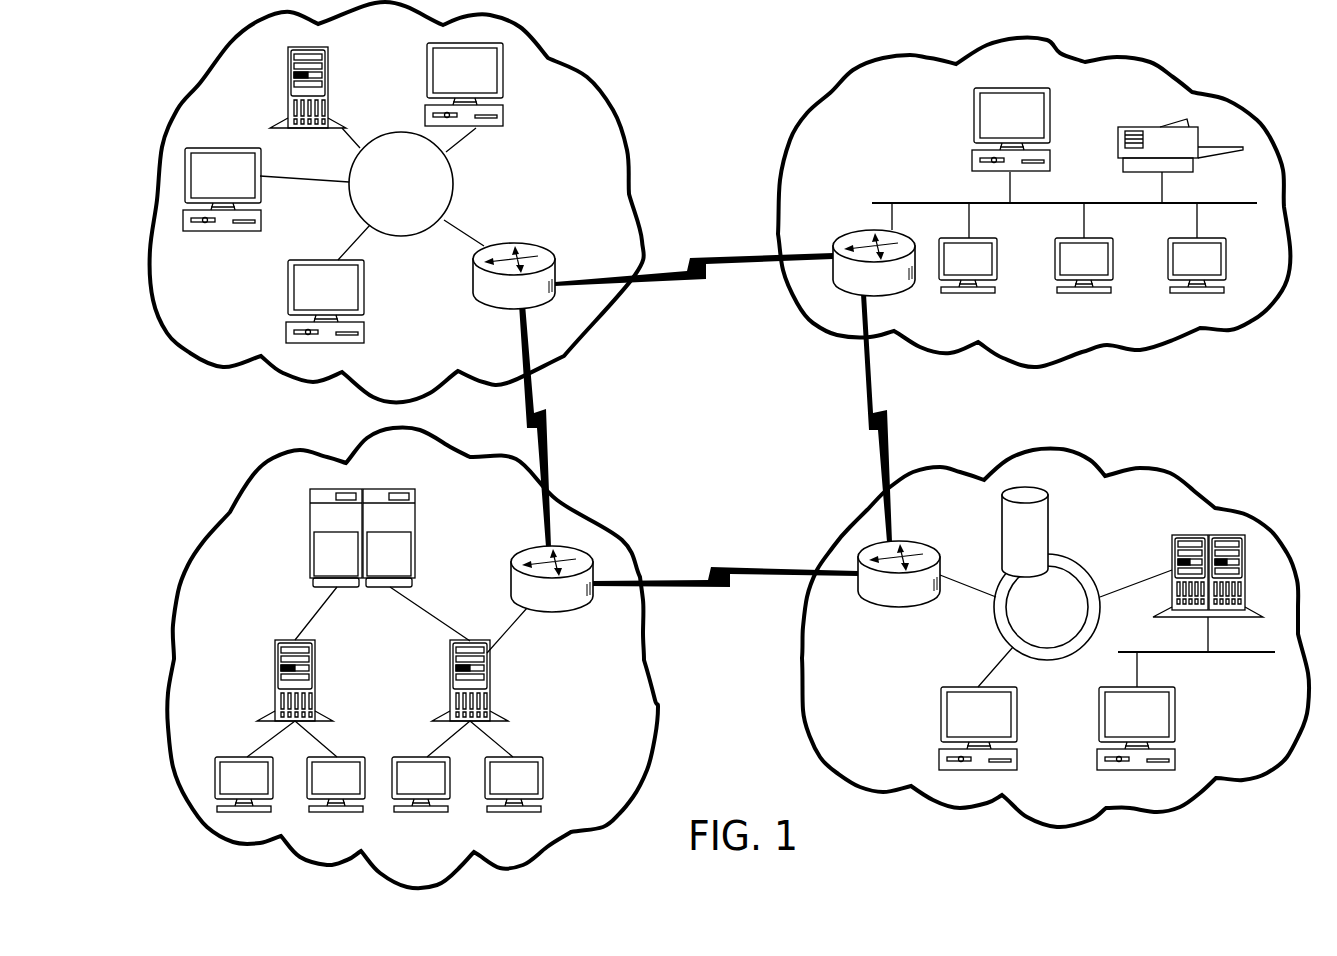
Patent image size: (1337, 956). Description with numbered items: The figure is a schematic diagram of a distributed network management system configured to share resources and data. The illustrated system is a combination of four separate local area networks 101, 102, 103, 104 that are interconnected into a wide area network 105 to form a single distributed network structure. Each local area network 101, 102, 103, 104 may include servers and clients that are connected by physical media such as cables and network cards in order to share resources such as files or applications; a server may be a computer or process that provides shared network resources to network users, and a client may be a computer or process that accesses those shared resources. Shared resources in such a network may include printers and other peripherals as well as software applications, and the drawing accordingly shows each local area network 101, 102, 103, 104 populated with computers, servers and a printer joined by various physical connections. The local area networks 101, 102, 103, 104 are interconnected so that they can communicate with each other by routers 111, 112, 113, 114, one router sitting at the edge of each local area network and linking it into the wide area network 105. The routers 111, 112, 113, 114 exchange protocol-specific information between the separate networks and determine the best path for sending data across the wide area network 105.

The local area network 101 is at (556, 191).
The local area network 102 is at (908, 140).
The local area network 103 is at (594, 708).
The local area network 104 is at (884, 685).
The wide area network 105 is at (734, 438).
The router 111 is at (492, 309).
The router 112 is at (837, 240).
The router 113 is at (532, 549).
The router 114 is at (940, 552).